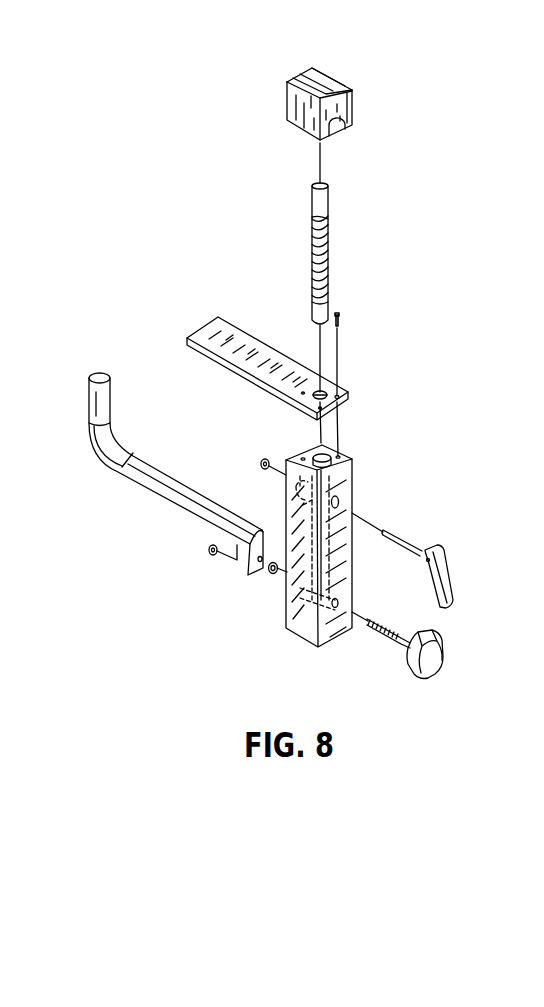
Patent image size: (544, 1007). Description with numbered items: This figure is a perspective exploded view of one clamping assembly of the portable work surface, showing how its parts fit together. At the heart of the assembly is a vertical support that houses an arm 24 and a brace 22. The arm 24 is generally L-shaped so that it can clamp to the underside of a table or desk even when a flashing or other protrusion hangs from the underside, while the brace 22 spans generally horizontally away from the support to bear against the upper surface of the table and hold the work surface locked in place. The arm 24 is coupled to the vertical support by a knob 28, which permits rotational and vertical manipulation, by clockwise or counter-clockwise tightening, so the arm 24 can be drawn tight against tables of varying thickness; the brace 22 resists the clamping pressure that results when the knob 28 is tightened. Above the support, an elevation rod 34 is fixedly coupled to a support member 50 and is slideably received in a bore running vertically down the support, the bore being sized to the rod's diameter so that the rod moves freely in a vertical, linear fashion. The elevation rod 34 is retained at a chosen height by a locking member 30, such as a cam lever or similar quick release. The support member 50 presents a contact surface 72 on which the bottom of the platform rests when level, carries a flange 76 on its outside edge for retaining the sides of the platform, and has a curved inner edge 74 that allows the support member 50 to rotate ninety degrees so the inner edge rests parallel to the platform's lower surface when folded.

The brace 22 is at (254, 379).
The arm 24 is at (152, 494).
The knob 28 is at (444, 656).
The locking member 30 is at (445, 572).
The elevation rod 34 is at (313, 198).
The support member 50 is at (302, 111).
The contact surface 72 is at (310, 82).
The inner edge 74 is at (345, 88).
The flange 76 is at (297, 93).